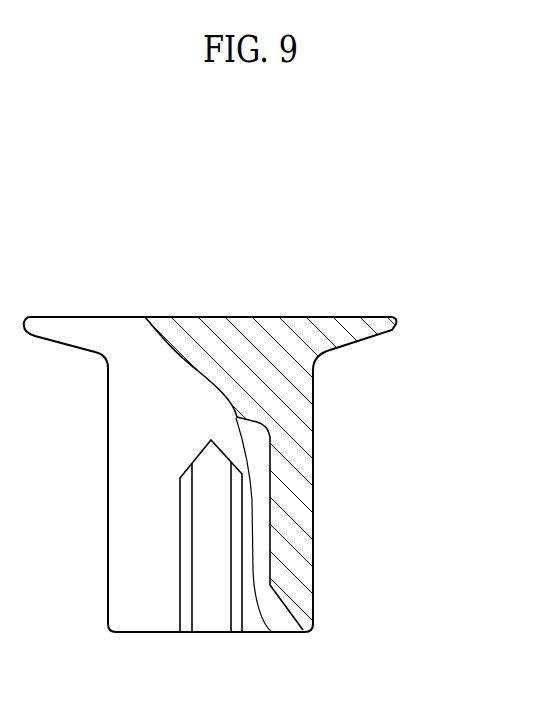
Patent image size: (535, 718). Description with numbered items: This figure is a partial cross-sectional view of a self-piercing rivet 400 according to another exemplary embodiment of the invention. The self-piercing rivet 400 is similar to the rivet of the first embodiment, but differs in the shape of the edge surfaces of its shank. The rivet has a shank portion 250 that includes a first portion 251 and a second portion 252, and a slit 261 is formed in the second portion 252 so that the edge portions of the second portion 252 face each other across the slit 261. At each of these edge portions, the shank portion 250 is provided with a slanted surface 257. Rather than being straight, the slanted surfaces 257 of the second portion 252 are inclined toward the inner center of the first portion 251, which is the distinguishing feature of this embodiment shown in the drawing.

The self-piercing rivet 400 is at (223, 231).
The shank portion 250 is at (318, 594).
The first portion 251 is at (303, 397).
The second portion 252 is at (302, 543).
The slanted surface 257 is at (187, 563).
The slit 261 is at (213, 605).